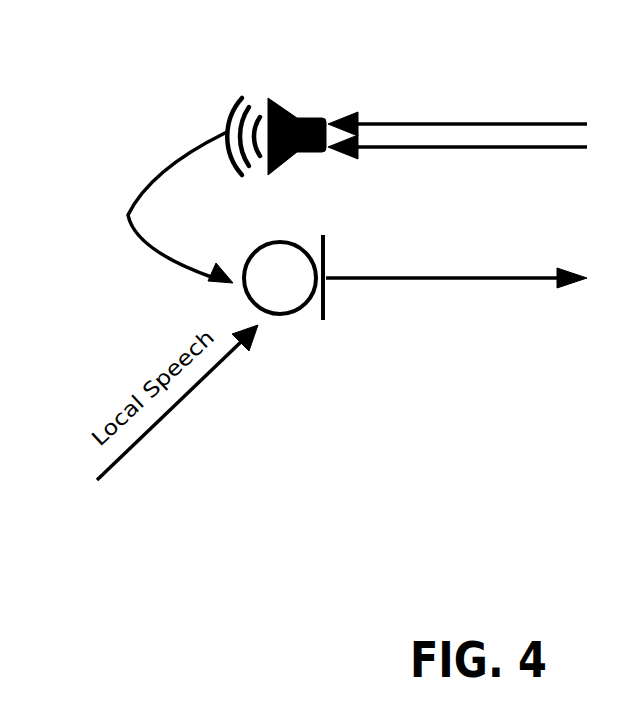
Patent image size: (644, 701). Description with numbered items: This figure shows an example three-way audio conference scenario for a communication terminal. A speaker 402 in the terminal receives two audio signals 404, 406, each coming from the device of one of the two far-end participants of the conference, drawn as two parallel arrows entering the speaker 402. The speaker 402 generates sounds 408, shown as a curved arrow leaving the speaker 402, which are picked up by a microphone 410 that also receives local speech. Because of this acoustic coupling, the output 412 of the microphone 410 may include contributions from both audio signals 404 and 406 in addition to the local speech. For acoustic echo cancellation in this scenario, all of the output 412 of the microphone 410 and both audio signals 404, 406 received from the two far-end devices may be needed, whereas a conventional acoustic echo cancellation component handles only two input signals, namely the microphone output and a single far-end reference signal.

The speaker 402 is at (283, 106).
The audio signal 404 is at (545, 123).
The audio signal 406 is at (545, 147).
The sounds 408 is at (127, 222).
The microphone 410 is at (295, 310).
The output 412 is at (463, 280).